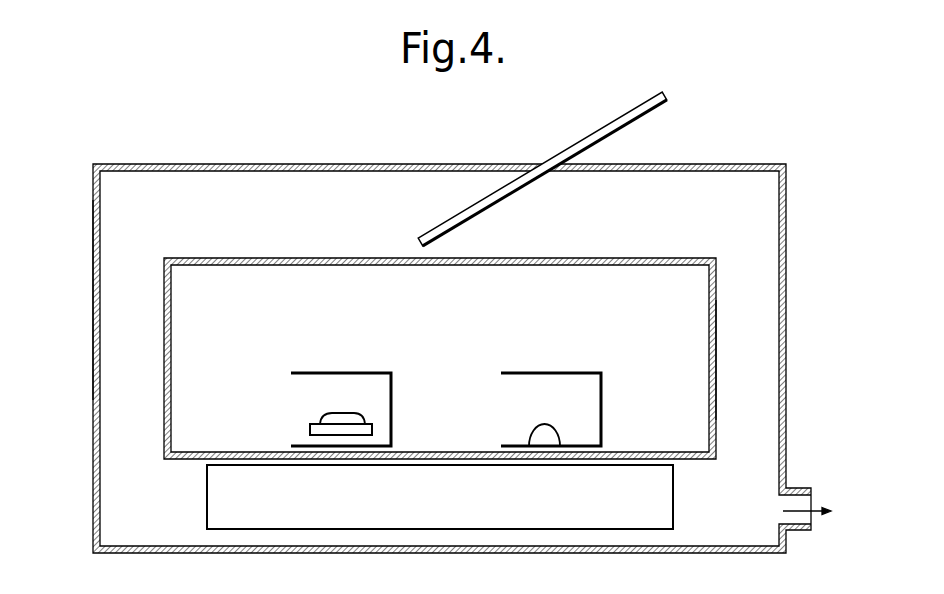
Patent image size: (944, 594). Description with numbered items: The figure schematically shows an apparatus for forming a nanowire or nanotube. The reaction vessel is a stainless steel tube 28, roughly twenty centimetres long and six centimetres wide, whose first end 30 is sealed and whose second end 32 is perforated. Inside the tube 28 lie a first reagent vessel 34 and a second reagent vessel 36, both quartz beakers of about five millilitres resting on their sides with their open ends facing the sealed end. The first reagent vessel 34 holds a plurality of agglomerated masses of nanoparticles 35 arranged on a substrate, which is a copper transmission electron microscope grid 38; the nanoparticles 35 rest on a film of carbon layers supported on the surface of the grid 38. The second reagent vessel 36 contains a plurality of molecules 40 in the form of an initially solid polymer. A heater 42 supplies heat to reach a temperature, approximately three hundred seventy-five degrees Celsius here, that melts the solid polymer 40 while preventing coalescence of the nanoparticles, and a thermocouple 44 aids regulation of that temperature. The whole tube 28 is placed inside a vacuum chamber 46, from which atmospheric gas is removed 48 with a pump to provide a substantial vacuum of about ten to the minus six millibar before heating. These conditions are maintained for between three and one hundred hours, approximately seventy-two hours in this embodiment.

The tube 28 is at (348, 258).
The first end 30 is at (164, 384).
The second end 32 is at (716, 278).
The first reagent vessel 34 is at (330, 372).
The nanoparticles 35 is at (332, 418).
The second reagent vessel 36 is at (551, 372).
The grid 38 is at (318, 428).
The molecules 40 is at (538, 437).
The heater 42 is at (637, 518).
The thermocouple 44 is at (597, 131).
The vacuum chamber 46 is at (786, 327).
The removal of atmospheric gas 48 is at (795, 517).